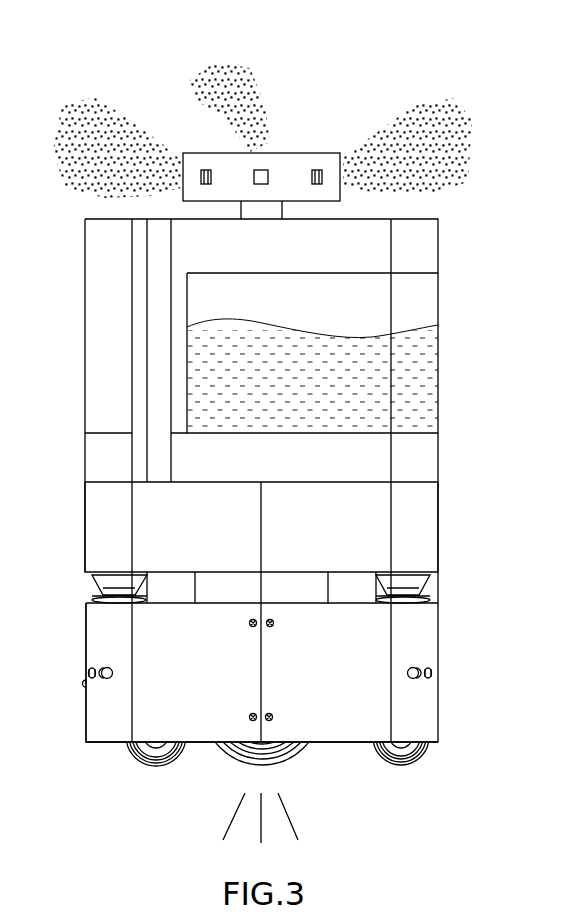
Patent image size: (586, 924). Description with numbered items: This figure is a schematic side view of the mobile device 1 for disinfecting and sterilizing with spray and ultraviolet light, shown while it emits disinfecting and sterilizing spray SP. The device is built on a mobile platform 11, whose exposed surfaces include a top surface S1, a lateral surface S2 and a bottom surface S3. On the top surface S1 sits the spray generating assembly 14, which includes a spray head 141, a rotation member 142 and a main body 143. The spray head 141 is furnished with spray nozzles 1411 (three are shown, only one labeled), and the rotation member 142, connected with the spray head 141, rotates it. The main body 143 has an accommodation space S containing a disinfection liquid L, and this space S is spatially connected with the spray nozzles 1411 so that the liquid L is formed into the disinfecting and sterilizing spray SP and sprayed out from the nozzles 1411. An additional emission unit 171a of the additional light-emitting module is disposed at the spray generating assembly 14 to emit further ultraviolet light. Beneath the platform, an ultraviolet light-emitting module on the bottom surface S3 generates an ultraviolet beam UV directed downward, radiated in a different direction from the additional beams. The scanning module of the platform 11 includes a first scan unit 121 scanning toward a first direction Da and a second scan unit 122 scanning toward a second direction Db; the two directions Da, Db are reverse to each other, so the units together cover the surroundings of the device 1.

The mobile device for disinfecting and sterilizing with spray and ultraviolet light 1 is at (522, 134).
The mobile platform 11 is at (428, 547).
The spray generating assembly 14 is at (261, 119).
The spray head 141 is at (315, 160).
The spray nozzle 1411 is at (317, 184).
The rotation member 142 is at (250, 210).
The main body 143 is at (428, 250).
The additional emission unit 171a is at (157, 305).
The first scan unit 121 is at (108, 585).
The second scan unit 122 is at (412, 585).
The accommodation space S is at (416, 302).
The disinfection liquid L is at (408, 365).
The top surface S1 is at (408, 480).
The lateral surface S2 is at (353, 648).
The bottom surface S3 is at (337, 745).
The disinfecting and sterilizing spray SP is at (215, 80).
The ultraviolet beam UV is at (236, 815).
The first direction Da is at (68, 510).
The second direction Db is at (505, 510).